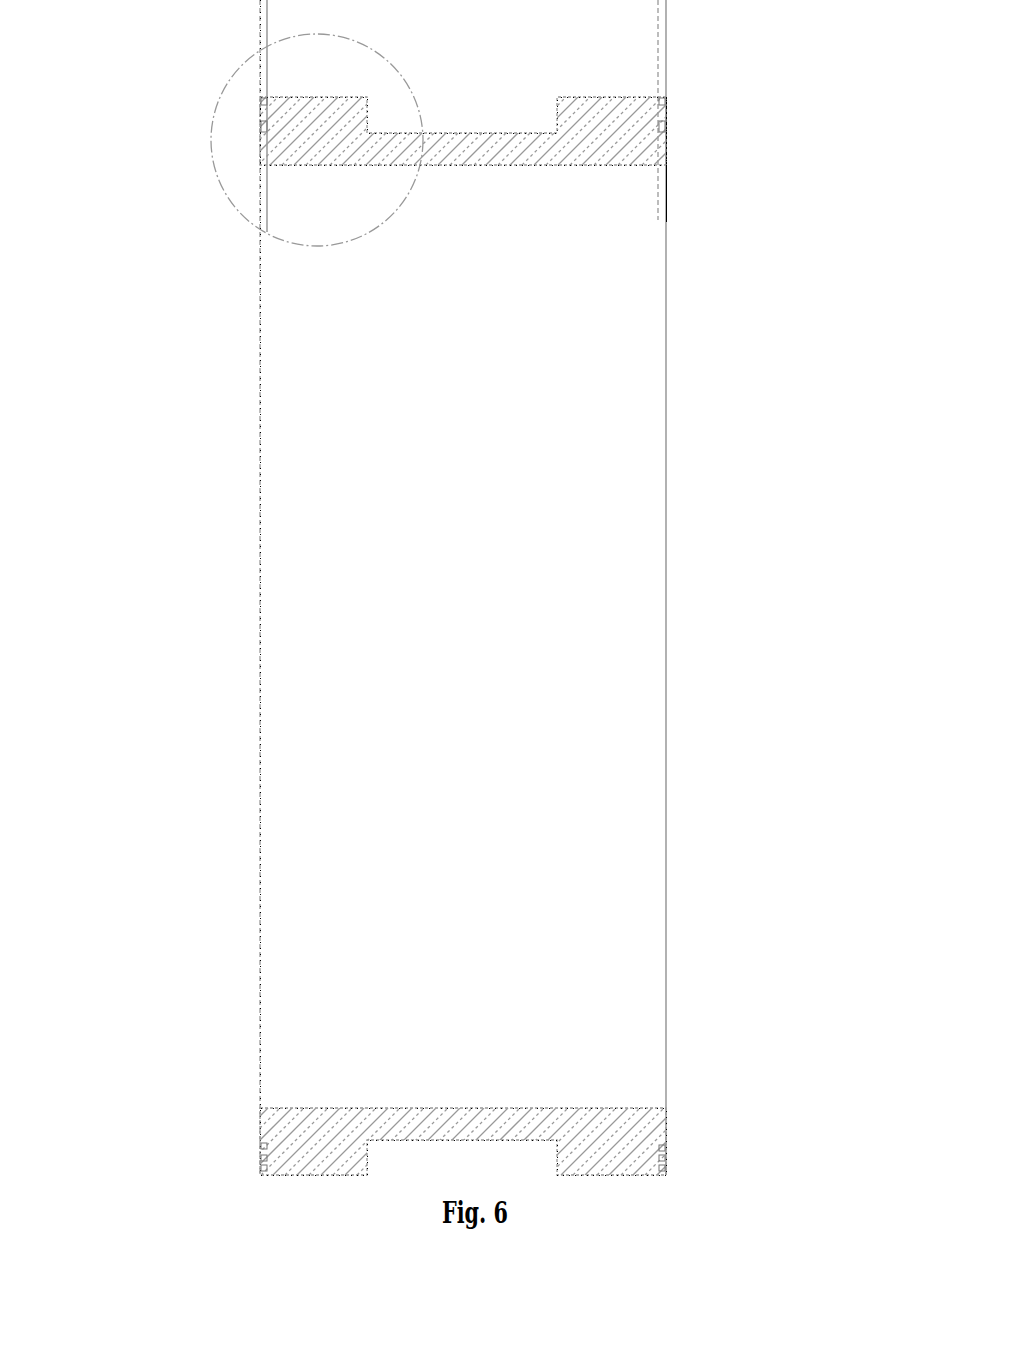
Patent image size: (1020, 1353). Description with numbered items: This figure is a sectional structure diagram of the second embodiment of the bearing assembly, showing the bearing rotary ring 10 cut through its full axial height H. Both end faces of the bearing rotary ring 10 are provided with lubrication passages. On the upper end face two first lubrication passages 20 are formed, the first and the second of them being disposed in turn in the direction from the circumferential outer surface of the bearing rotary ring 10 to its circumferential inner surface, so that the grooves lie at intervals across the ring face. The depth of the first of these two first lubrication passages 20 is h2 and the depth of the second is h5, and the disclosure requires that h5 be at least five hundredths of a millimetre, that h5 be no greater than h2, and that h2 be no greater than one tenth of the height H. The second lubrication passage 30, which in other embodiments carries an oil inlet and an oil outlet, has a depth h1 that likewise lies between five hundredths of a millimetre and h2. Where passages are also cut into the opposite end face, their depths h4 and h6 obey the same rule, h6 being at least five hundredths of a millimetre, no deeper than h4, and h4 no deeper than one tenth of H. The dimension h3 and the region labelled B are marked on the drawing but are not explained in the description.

The bearing rotary ring 10 is at (588, 1135).
The first lubrication passage 20 is at (262, 1158).
The second lubrication passage 30 is at (262, 1168).
The detail region B is at (253, 228).
The height of the bearing rotary ring H is at (260, 669).
The depth of the second lubrication passage h1 is at (300, 25).
The depth of the first of the two first lubrication passages h2 is at (300, 114).
The dimension h3 is at (625, 25).
The depth of a lubrication passage on the other end face h4 is at (625, 114).
The depth of the second of the two first lubrication passages h5 is at (300, 218).
The depth of a lubrication passage on the other end face h6 is at (625, 205).